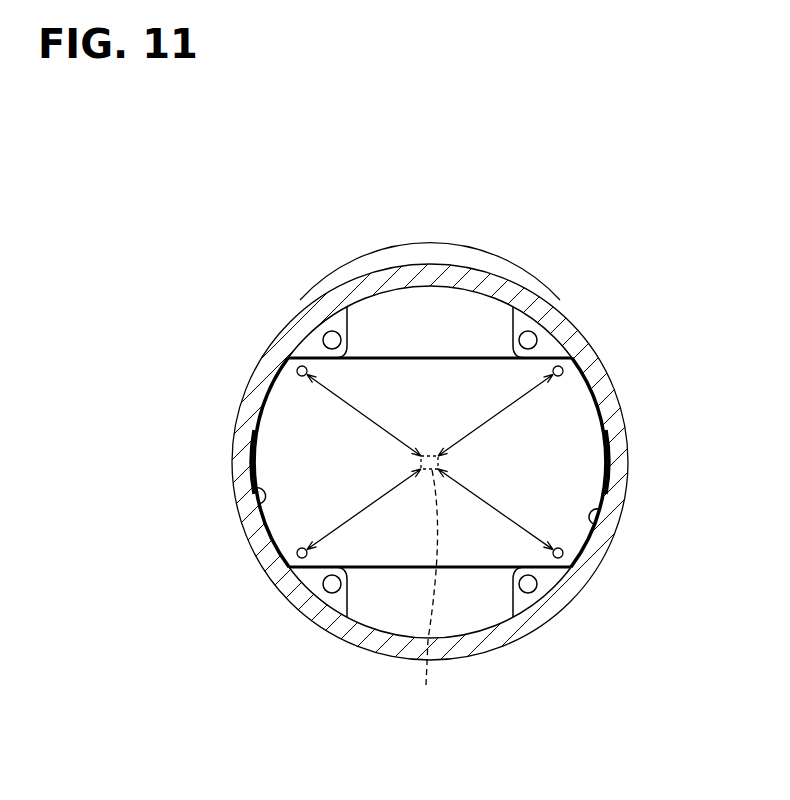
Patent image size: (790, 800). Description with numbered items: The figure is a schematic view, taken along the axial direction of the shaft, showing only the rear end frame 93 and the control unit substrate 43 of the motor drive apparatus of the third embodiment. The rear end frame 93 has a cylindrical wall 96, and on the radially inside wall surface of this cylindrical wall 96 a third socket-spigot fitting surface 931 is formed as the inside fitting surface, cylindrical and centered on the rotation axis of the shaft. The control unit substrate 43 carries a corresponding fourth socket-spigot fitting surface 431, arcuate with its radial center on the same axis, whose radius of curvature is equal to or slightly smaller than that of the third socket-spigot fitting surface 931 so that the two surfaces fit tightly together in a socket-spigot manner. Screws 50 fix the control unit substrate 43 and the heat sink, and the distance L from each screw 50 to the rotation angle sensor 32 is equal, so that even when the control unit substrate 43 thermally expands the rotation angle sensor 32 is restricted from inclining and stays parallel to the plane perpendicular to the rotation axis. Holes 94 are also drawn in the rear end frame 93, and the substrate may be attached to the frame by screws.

The rear end frame 93 is at (418, 278).
The cylindrical wall 96 is at (481, 280).
The mounting holes 94 is at (328, 333).
The screws 50 is at (296, 370).
The control unit substrate 43 is at (578, 433).
The fourth socket-spigot fitting surface 431 is at (237, 467).
The third socket-spigot fitting surface 931 is at (256, 508).
The rotation angle sensor 32 is at (427, 591).